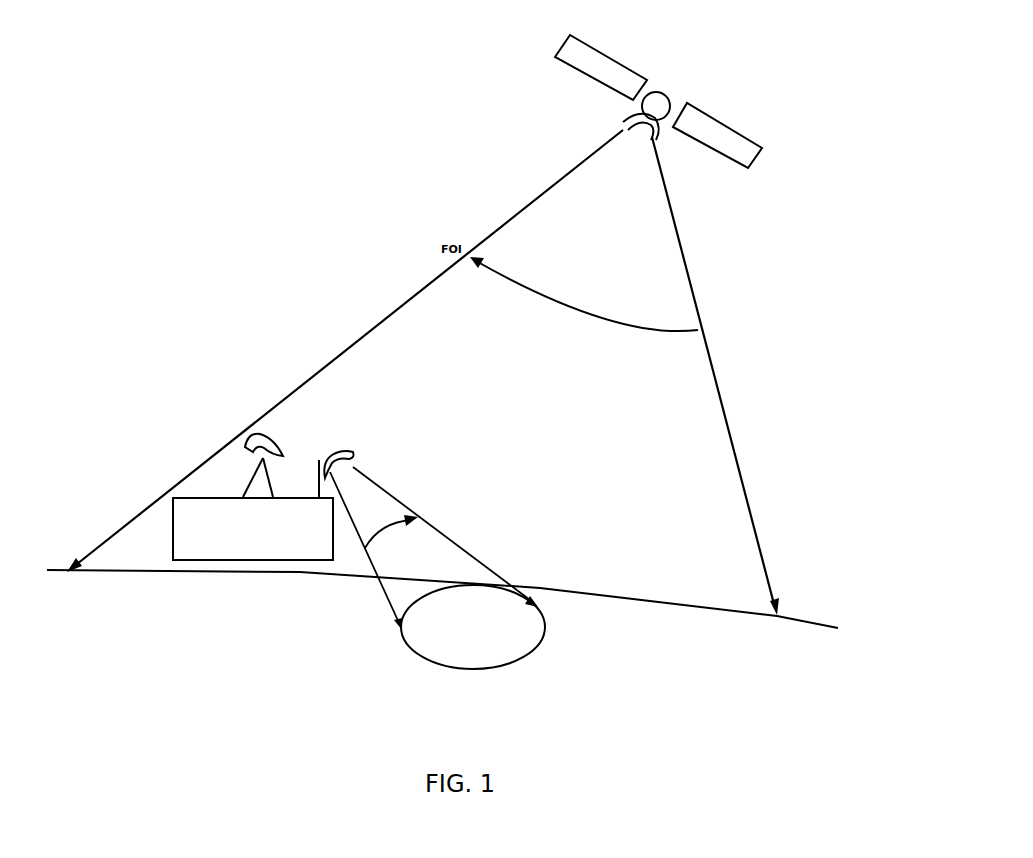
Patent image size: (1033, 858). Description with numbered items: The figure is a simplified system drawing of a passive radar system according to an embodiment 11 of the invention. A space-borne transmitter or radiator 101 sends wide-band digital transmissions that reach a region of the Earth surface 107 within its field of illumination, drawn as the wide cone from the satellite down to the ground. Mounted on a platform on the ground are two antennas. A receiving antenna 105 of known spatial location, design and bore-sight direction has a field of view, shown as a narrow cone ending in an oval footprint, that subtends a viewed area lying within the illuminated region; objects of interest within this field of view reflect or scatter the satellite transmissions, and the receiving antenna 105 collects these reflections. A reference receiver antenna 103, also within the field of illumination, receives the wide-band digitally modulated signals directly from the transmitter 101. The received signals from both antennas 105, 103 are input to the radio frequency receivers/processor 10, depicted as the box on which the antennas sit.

The embodiment 11 is at (268, 259).
The space-borne transmitter 101 is at (662, 136).
The radio frequency receivers/processor 10 is at (203, 495).
The reference receiver antenna 103 is at (249, 465).
The receiving antenna 105 is at (352, 458).
The Earth surface 107 is at (157, 572).